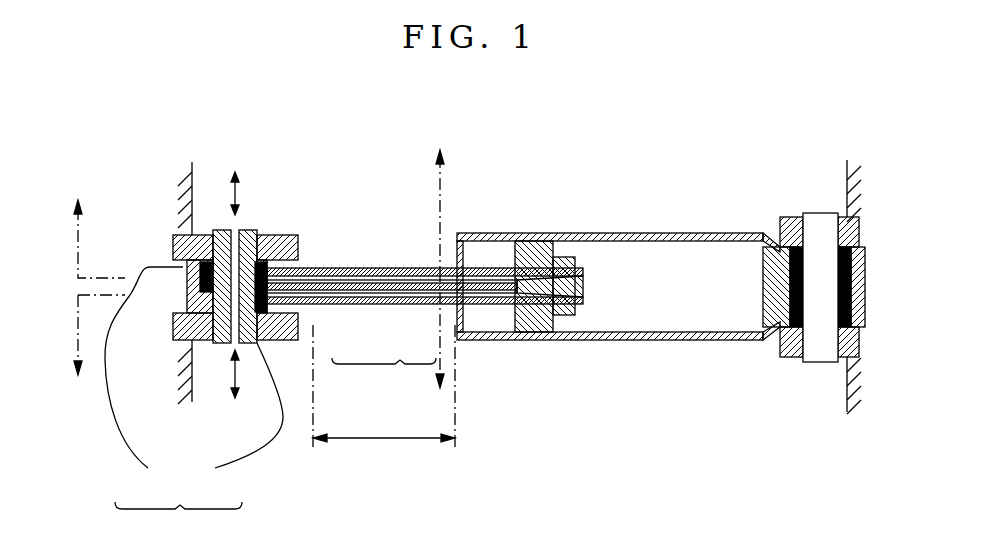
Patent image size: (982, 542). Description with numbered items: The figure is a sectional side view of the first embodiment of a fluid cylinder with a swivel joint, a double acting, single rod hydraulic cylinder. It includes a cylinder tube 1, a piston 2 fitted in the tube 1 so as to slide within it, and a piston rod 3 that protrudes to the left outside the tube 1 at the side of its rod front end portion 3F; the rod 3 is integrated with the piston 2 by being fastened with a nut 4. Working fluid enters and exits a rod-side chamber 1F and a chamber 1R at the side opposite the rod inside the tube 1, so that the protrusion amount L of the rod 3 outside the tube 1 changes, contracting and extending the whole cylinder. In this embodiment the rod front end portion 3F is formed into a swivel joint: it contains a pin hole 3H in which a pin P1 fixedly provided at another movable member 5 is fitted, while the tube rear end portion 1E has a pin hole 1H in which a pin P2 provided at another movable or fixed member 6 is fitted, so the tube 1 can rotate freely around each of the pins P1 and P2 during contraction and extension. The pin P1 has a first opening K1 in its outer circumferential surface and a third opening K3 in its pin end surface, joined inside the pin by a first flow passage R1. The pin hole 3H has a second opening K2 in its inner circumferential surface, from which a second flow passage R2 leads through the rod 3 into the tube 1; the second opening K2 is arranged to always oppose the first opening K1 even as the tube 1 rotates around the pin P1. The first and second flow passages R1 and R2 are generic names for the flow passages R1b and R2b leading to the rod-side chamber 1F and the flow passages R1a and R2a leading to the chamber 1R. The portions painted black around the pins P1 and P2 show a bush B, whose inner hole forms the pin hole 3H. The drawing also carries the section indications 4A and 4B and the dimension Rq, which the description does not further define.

The cylinder tube 1 is at (676, 233).
The tube rear end portion 1E is at (866, 265).
The rod-side chamber 1F is at (497, 325).
The chamber at a side opposite the rod 1R is at (711, 322).
The pin hole 1H is at (832, 297).
The piston 2 is at (532, 241).
The piston rod 3 is at (400, 268).
The rod front end portion 3F is at (319, 338).
The pin hole 3H is at (293, 257).
The nut 4 is at (578, 262).
The movable member 5 is at (192, 170).
The movable or fixed member 6 is at (847, 182).
The bush B is at (185, 246).
The first opening K1 is at (258, 250).
The second opening K2 is at (300, 280).
The third opening K3 is at (237, 234).
The clearance distance Rq is at (230, 205).
The pin P1 is at (248, 345).
The pin P2 is at (822, 364).
The first flow passage R1 is at (178, 522).
The flow passage R1a is at (159, 367).
The flow passage R1b is at (236, 364).
The second flow passage R2 is at (384, 374).
The flow passage R2a is at (405, 305).
The flow passage R2b is at (350, 305).
The protrusion amount L is at (384, 397).
The section line 4A is at (254, 345).
The section line 4B is at (259, 199).